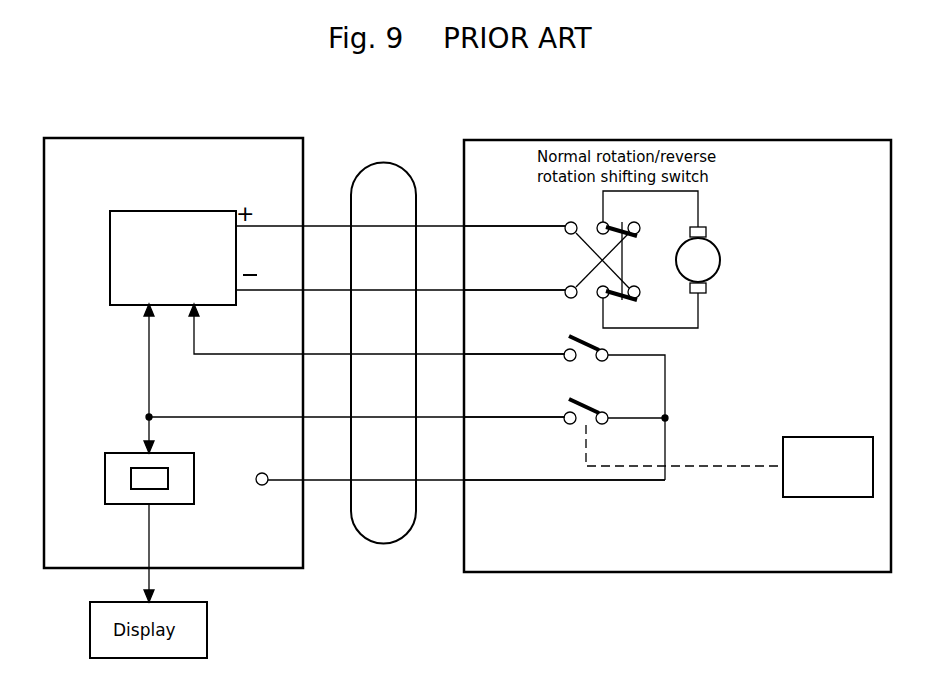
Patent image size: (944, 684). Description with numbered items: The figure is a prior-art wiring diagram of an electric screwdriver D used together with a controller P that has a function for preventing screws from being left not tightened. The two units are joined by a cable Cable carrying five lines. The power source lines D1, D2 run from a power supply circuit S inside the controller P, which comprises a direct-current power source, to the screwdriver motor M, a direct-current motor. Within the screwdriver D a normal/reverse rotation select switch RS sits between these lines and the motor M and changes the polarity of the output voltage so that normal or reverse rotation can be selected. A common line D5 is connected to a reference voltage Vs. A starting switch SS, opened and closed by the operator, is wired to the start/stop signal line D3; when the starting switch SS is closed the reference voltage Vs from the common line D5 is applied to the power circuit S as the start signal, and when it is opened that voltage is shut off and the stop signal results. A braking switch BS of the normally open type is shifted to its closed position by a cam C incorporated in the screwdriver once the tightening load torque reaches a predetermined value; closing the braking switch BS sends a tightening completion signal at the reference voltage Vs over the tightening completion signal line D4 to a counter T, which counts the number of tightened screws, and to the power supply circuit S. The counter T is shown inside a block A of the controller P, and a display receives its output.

The controller P is at (258, 138).
The power supply circuit S is at (176, 210).
The counter T is at (131, 470).
The control unit A is at (105, 487).
The reference voltage Vs is at (444, 480).
The cable Cable is at (381, 545).
The electric screwdriver D is at (831, 139).
The normal/reverse rotation select switch RS is at (617, 223).
The screwdriver motor M is at (698, 260).
The starting switch SS is at (593, 341).
The braking switch BS is at (593, 402).
The cam C is at (826, 498).
The power source line D1 is at (553, 227).
The power source line D2 is at (553, 291).
The start/stop signal line D3 is at (553, 354).
The tightening completion signal line D4 is at (553, 417).
The common line D5 is at (553, 480).